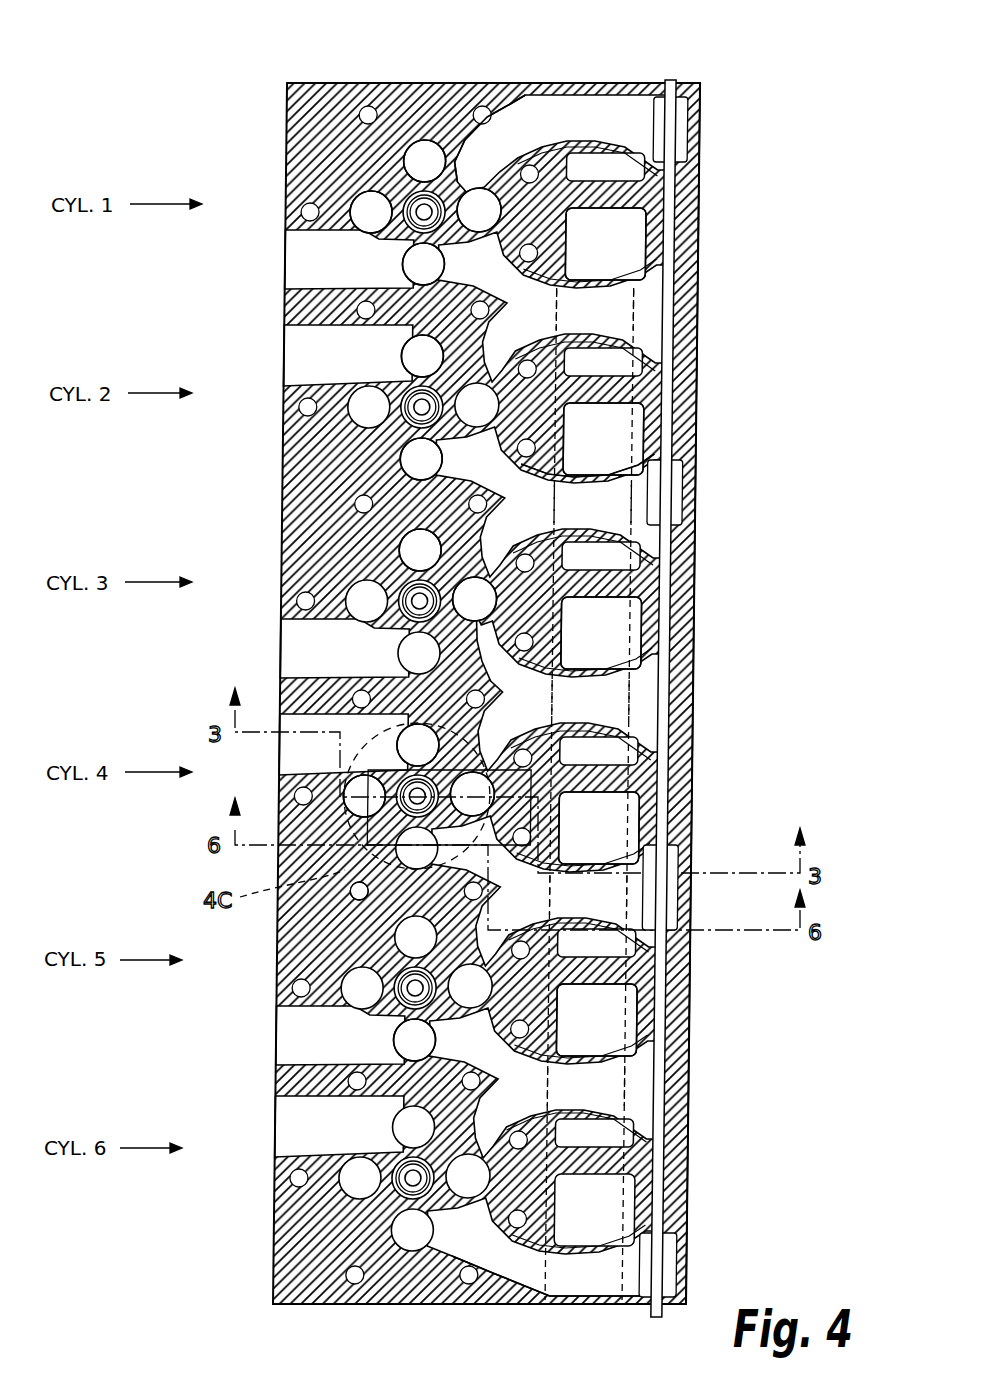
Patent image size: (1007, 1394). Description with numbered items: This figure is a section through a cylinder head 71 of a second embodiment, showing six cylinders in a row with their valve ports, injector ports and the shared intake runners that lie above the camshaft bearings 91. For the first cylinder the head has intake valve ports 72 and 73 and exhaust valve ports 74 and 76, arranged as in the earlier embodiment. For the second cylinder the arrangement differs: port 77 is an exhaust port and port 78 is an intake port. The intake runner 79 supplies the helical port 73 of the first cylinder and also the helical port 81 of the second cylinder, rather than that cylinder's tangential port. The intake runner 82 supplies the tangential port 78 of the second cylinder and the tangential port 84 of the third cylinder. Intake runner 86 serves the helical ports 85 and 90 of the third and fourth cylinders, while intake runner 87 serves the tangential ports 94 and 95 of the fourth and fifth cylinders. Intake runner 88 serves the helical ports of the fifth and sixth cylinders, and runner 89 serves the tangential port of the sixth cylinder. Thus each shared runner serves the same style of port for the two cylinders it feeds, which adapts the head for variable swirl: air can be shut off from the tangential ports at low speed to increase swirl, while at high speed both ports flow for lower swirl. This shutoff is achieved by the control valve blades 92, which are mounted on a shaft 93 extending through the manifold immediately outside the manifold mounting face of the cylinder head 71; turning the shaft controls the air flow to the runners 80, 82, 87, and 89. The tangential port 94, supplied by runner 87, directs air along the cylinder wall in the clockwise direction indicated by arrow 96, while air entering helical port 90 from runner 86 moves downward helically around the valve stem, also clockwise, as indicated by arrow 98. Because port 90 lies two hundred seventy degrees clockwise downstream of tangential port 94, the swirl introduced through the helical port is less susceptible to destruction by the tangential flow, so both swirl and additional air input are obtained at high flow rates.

The cylinder head 71 is at (305, 549).
The intake valve port 72 is at (424, 140).
The helical intake valve port 73 is at (480, 186).
The exhaust valve port 74 is at (365, 205).
The exhaust valve port 76 is at (405, 265).
The exhaust port 77 is at (405, 355).
The tangential intake port 78 is at (420, 455).
The intake runner 79 is at (648, 278).
The intake runner 80 is at (612, 112).
The helical intake port 81 is at (567, 403).
The intake runner 82 is at (640, 462).
The tangential intake port 84 is at (405, 545).
The helical intake port 85 is at (485, 598).
The intake runner 86 is at (640, 655).
The intake runner 87 is at (640, 850).
The intake runner 88 is at (640, 1040).
The intake runner 89 is at (617, 1257).
The helical intake port 90 is at (478, 790).
The camshaft bearings 91 is at (640, 295).
The control valve blades 92 is at (683, 127).
The shaft 93 is at (672, 188).
The tangential intake port 94 is at (362, 888).
The tangential intake port 95 is at (405, 1040).
The arrow 96 is at (372, 797).
The arrow 98 is at (425, 745).